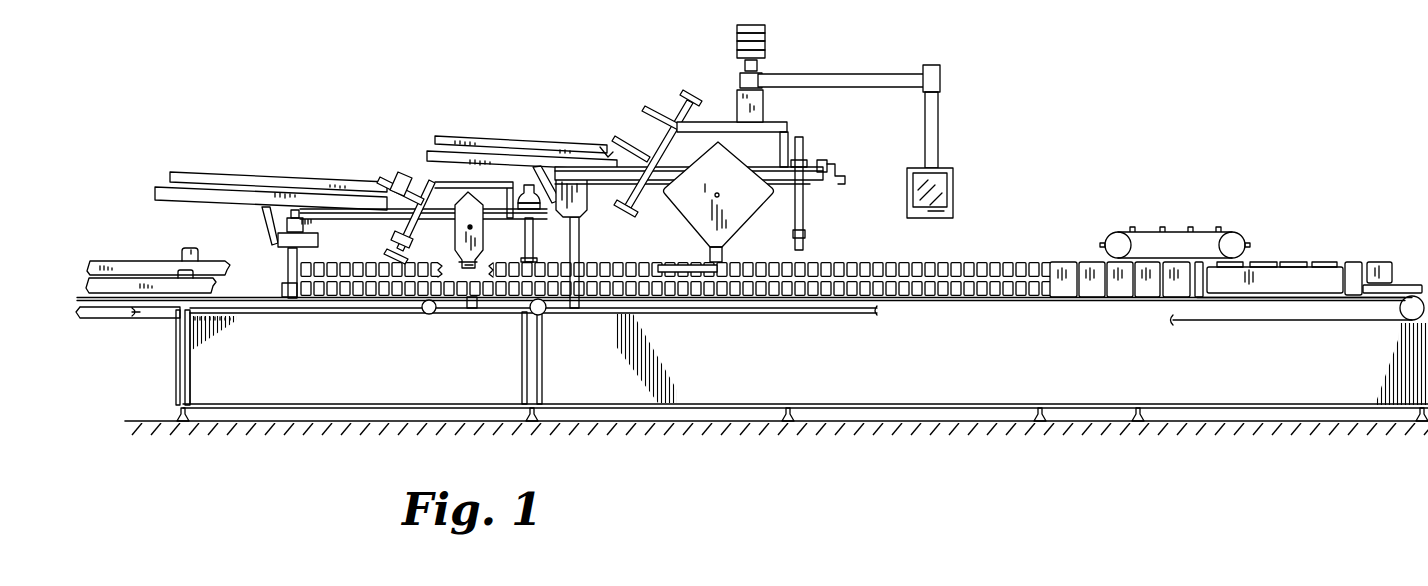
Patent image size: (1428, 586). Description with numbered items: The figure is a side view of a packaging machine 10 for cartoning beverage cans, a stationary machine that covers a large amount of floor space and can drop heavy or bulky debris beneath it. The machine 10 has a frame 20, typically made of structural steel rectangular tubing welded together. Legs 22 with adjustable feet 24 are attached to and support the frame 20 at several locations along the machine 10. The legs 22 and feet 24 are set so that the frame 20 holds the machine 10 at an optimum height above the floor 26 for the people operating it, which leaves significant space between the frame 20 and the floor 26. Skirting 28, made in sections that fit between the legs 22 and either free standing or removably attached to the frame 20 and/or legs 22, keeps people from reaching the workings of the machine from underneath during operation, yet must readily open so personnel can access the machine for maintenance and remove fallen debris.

The packaging machine 10 is at (462, 96).
The frame 20 is at (140, 312).
The legs 22 is at (178, 360).
The adjustable feet 24 is at (196, 421).
The floor 26 is at (738, 418).
The skirting 28 is at (357, 388).